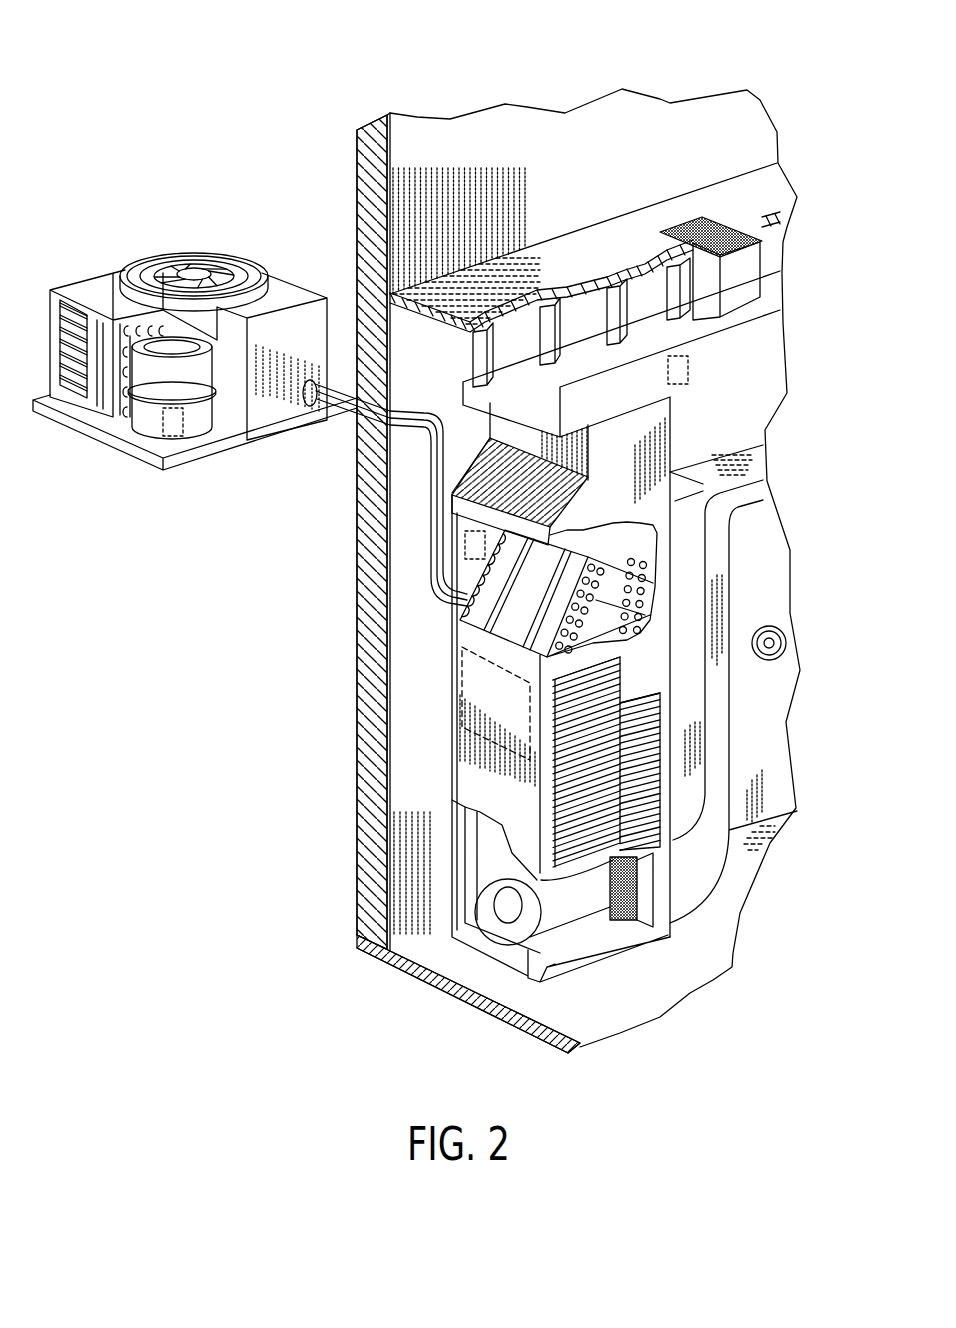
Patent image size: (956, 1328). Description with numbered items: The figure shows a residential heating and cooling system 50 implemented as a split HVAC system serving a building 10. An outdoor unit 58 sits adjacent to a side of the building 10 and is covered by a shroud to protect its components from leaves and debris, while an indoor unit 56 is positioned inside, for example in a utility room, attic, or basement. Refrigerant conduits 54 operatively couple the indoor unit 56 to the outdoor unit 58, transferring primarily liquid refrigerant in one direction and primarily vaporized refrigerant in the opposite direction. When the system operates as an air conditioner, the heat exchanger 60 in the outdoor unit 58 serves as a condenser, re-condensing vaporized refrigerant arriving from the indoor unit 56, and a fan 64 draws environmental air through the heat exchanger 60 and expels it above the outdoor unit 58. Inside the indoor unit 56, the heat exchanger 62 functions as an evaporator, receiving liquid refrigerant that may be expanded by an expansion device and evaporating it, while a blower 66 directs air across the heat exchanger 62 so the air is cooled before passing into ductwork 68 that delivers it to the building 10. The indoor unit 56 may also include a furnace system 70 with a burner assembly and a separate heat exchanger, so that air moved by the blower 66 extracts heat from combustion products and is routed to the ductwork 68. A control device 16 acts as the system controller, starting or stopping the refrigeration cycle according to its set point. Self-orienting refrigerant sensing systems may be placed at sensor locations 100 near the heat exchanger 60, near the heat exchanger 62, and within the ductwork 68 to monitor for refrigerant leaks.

The building 10 is at (598, 546).
The control device 16 is at (768, 624).
The residential heating and cooling system 50 is at (188, 84).
The refrigerant conduits 54 is at (413, 507).
The indoor unit 56 is at (453, 747).
The outdoor unit 58 is at (188, 303).
The heat exchanger 60 is at (123, 322).
The heat exchanger 62 is at (517, 612).
The fan 64 is at (212, 251).
The blower 66 is at (503, 925).
The ductwork 68 is at (734, 305).
The furnace system 70 is at (500, 667).
The sensor locations 100 is at (160, 420).